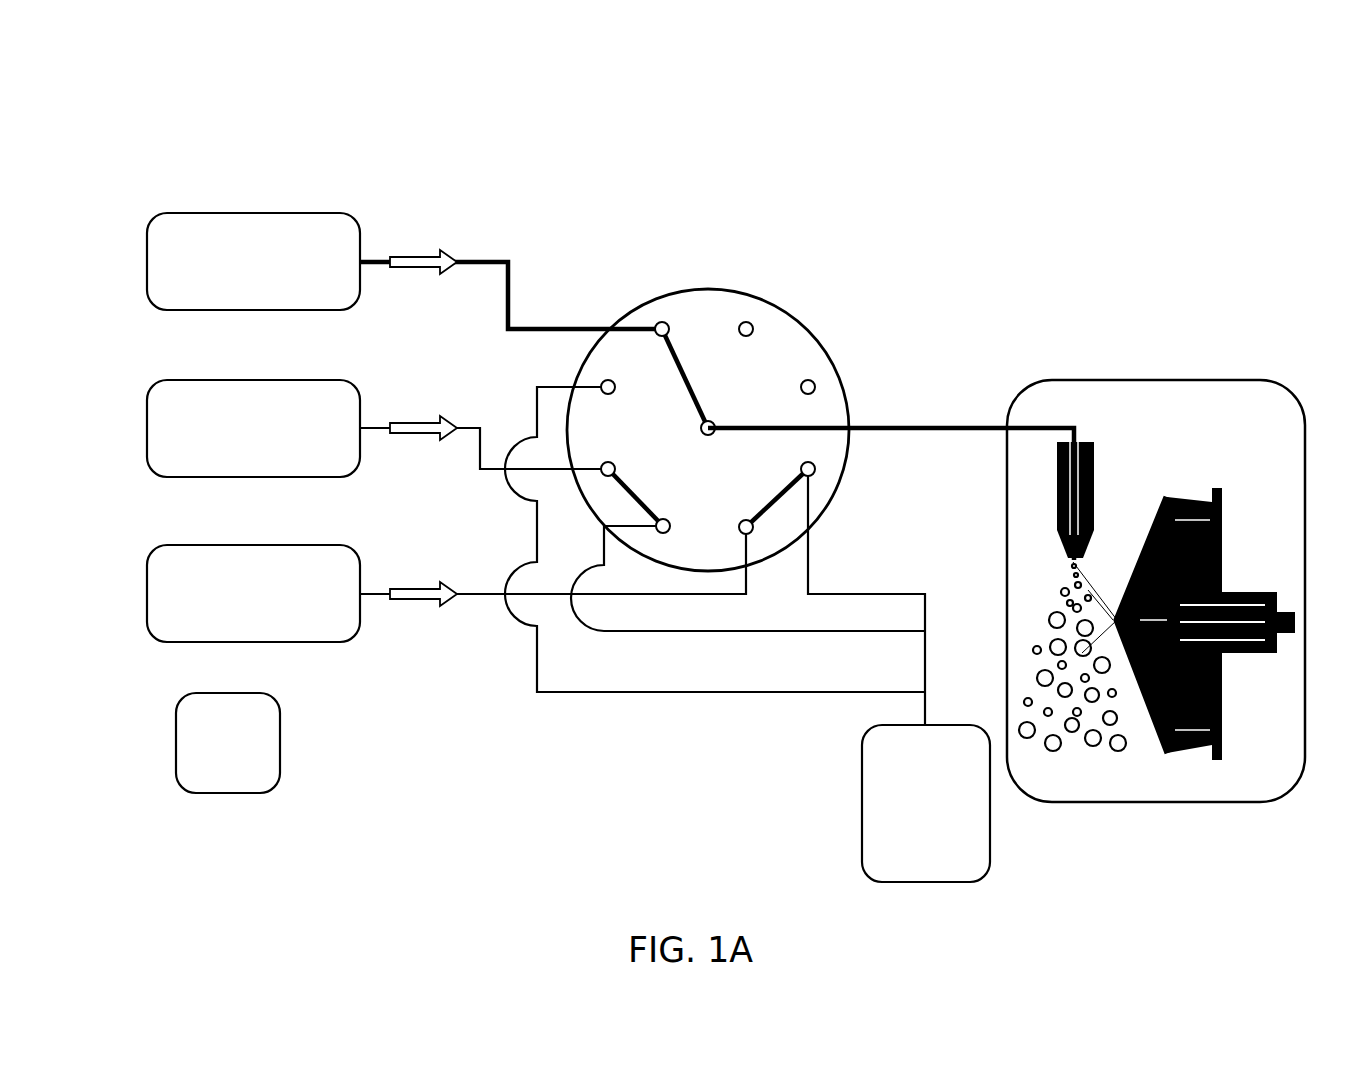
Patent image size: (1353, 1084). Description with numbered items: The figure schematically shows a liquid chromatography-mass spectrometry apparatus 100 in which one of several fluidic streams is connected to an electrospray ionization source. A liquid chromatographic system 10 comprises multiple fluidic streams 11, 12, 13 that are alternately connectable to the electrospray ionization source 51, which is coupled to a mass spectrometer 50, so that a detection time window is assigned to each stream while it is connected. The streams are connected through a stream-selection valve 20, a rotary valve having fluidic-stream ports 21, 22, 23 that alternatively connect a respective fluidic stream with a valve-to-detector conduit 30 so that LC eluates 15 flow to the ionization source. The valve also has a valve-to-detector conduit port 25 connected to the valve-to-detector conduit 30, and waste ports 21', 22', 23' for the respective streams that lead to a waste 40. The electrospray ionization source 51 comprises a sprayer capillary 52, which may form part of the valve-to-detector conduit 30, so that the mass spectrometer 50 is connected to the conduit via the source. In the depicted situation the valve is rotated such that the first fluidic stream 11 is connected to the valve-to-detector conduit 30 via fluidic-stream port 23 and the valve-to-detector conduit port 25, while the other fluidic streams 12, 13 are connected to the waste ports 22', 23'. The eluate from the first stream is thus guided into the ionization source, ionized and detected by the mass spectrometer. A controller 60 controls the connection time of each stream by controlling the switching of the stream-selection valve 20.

The LC-MS apparatus 100 is at (266, 158).
The liquid chromatographic system 10 is at (328, 808).
The first fluidic stream 11 is at (275, 285).
The second fluidic stream 12 is at (275, 454).
The third fluidic stream 13 is at (275, 621).
The LC eluates 15 is at (418, 252).
The stream-selection valve 20 is at (818, 337).
The fluidic-stream port 21 is at (665, 314).
The waste port 21' is at (551, 364).
The fluidic-stream port 22 is at (633, 453).
The waste port 22' is at (667, 485).
The fluidic-stream port 23 is at (757, 486).
The waste port 23' is at (859, 507).
The valve-to-detector conduit port 25 is at (710, 420).
The valve-to-detector conduit 30 is at (943, 430).
The waste 40 is at (947, 826).
The mass spectrometer 50 is at (1203, 765).
The electrospray ionization source 51 is at (1138, 780).
The sprayer capillary 52 is at (1077, 473).
The controller 60 is at (250, 765).